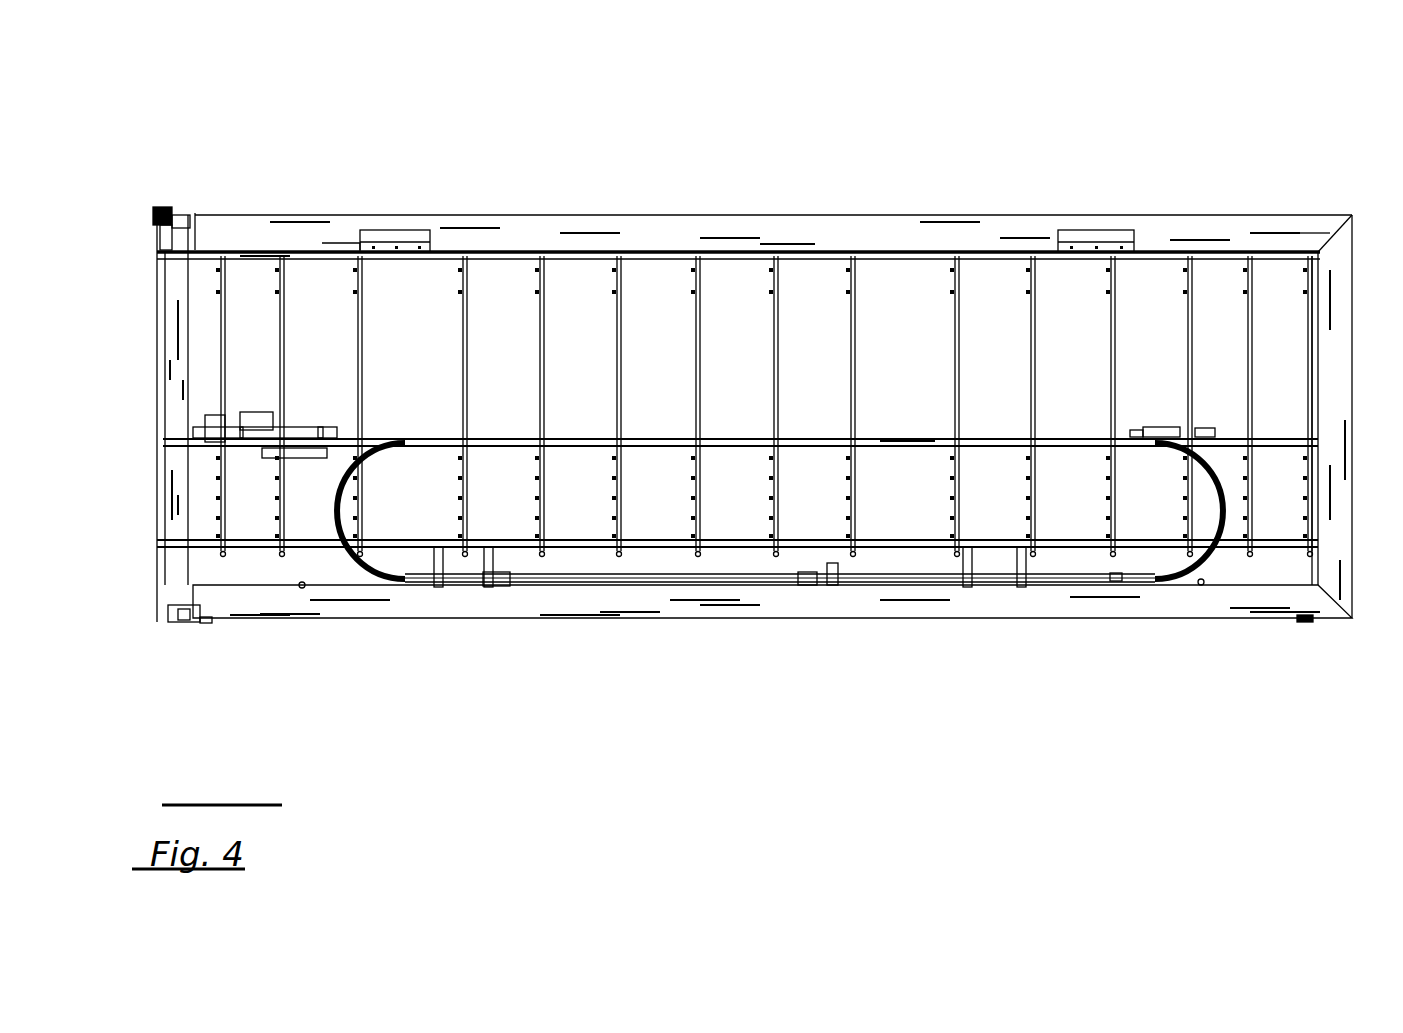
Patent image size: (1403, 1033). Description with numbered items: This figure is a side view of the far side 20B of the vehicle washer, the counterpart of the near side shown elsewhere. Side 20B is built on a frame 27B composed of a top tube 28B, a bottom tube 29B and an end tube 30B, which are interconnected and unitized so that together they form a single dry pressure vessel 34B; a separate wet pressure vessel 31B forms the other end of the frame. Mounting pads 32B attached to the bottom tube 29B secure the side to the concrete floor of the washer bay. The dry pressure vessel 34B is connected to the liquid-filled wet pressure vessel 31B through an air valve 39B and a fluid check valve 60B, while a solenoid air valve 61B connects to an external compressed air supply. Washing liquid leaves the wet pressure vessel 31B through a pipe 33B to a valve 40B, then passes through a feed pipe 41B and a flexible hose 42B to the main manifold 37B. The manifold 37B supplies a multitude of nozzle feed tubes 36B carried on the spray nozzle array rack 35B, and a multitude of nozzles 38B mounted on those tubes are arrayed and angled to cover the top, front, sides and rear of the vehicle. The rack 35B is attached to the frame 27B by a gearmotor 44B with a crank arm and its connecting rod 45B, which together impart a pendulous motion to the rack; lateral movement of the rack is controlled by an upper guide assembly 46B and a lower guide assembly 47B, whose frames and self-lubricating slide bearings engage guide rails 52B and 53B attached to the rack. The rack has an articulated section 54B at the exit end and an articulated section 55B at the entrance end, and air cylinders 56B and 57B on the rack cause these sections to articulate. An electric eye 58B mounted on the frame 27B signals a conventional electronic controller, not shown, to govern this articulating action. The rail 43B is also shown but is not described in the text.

The side 20B is at (205, 152).
The frame 27B is at (874, 192).
The top tube 28B is at (682, 223).
The bottom tube 29B is at (977, 612).
The end tube 30B is at (1352, 260).
The wet pressure vessel 31B is at (152, 316).
The mounting pad 32B is at (207, 627).
The pipe 33B is at (170, 608).
The dry pressure vessel 34B is at (1167, 195).
The spray nozzle array rack 35B is at (290, 312).
The nozzle feed tube 36B is at (837, 270).
The main manifold 37B is at (907, 440).
The nozzle 38B is at (466, 290).
The air valve 39B is at (153, 207).
The valve 40B is at (805, 590).
The feed pipe 41B is at (647, 580).
The flexible hose 42B is at (378, 580).
The carriage rail 43B is at (470, 440).
The gearmotor 44B is at (213, 417).
The connecting rod 45B is at (303, 427).
The guide assembly 46B is at (395, 212).
The guide assembly 47B is at (498, 585).
The guide rail 52B is at (738, 253).
The guide rail 53B is at (1201, 585).
The articulated section 54B is at (267, 270).
The articulated section 55B is at (1275, 280).
The air cylinder 56B is at (300, 458).
The air cylinder 57B is at (1165, 420).
The electric eye 58B is at (302, 588).
The fluid check valve 60B is at (187, 213).
The solenoid air valve 61B is at (155, 227).